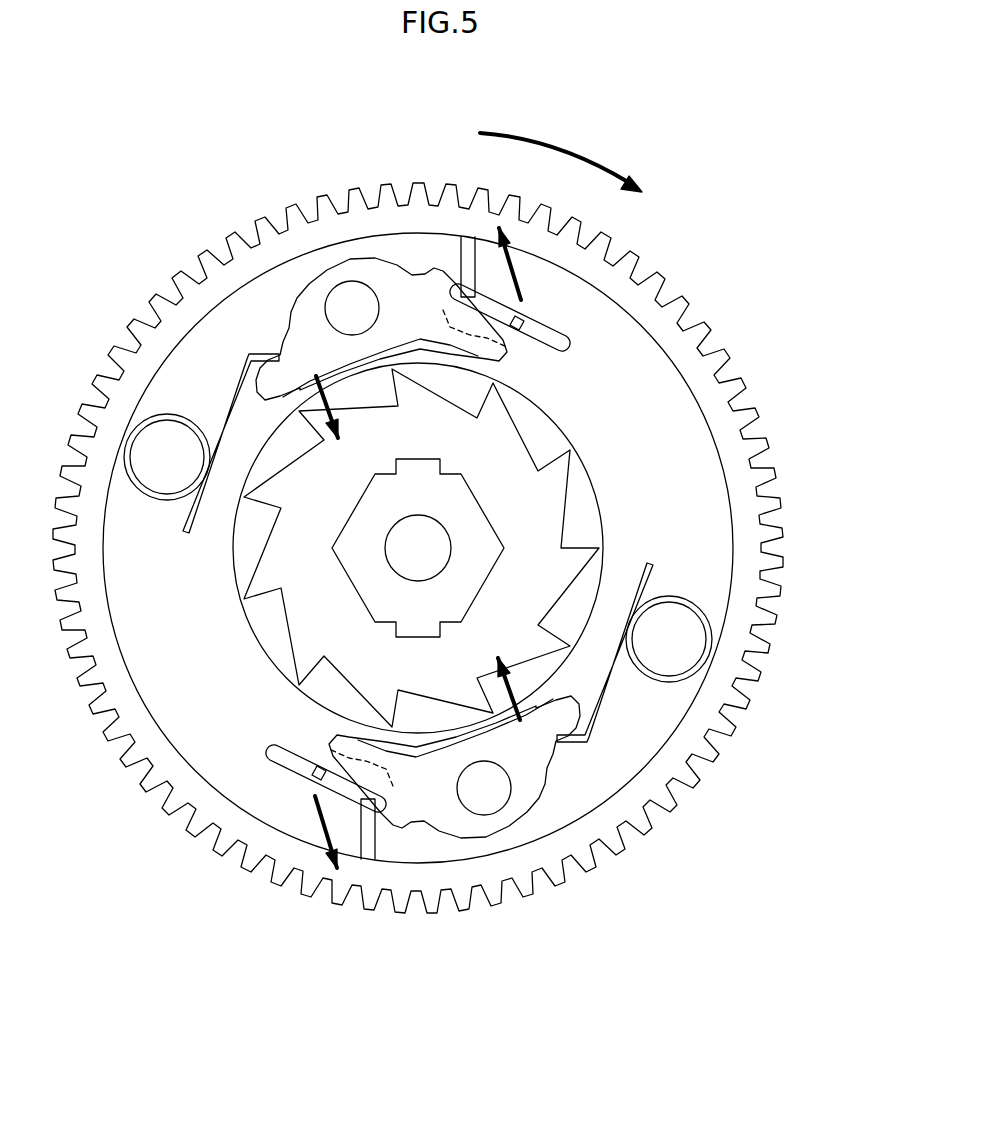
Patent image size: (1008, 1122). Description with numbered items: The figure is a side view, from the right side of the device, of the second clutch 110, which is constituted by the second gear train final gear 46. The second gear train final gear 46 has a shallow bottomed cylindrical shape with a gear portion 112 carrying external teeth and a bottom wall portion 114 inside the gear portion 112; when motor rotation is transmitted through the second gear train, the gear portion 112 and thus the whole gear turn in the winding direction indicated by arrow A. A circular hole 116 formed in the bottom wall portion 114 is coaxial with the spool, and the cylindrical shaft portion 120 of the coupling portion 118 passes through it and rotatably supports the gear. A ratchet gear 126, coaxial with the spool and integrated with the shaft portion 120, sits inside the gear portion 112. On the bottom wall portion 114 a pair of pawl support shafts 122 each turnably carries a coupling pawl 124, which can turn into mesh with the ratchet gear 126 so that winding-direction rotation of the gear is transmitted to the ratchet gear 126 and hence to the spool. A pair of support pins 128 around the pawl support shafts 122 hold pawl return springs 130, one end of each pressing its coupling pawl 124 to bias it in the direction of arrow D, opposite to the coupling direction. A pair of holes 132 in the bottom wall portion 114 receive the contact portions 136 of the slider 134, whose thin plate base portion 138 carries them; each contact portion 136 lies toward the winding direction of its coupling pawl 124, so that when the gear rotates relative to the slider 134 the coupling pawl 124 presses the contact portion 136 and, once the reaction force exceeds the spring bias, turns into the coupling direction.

The second clutch 110 is at (777, 213).
The gear portion 112 is at (773, 510).
The second gear train final gear 46 is at (757, 364).
The bottom wall portion 114 is at (710, 462).
The circular hole 116 is at (590, 500).
The coupling portion 118 is at (238, 623).
The shaft portion 120 is at (585, 462).
The pawl support shaft 122 is at (348, 294).
The coupling pawl 124 is at (378, 266).
The ratchet gear 126 is at (517, 462).
The support pin 128 is at (175, 440).
The pawl return spring 130 is at (192, 520).
The hole 132 is at (520, 352).
The slider 134 is at (565, 328).
The contact portion 136 is at (452, 334).
The base portion 138 is at (545, 307).
The winding direction A is at (561, 132).
The direction opposite to the coupling direction D is at (448, 586).